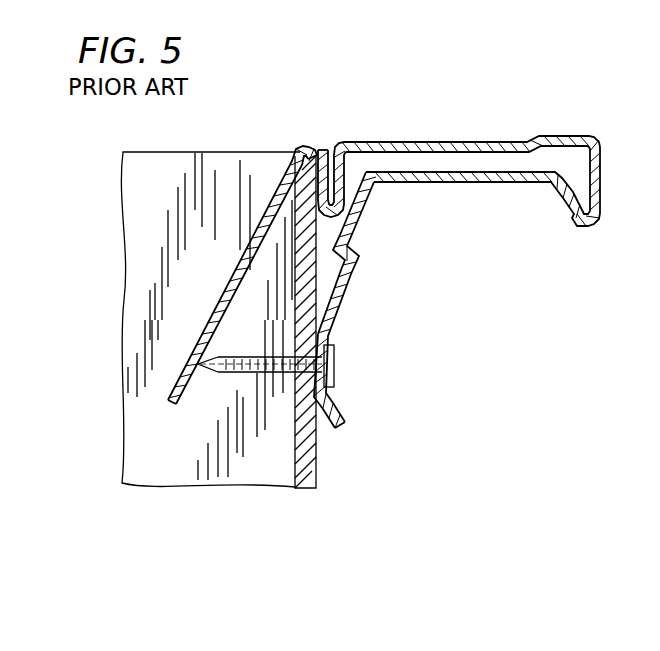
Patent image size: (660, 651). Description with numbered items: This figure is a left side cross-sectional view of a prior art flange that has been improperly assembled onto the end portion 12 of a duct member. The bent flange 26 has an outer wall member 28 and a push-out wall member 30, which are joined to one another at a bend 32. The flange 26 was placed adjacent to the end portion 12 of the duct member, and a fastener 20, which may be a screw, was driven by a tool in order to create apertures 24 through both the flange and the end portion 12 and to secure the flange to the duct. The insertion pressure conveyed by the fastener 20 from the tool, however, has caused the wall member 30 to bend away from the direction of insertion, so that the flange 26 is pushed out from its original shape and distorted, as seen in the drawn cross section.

The end portion 12 is at (311, 490).
The fastener 20 is at (221, 378).
The apertures 24 is at (284, 356).
The bent flange 26 is at (454, 249).
The outer wall member 28 is at (330, 342).
The push-out wall member 30 is at (222, 330).
The bend 32 is at (309, 152).